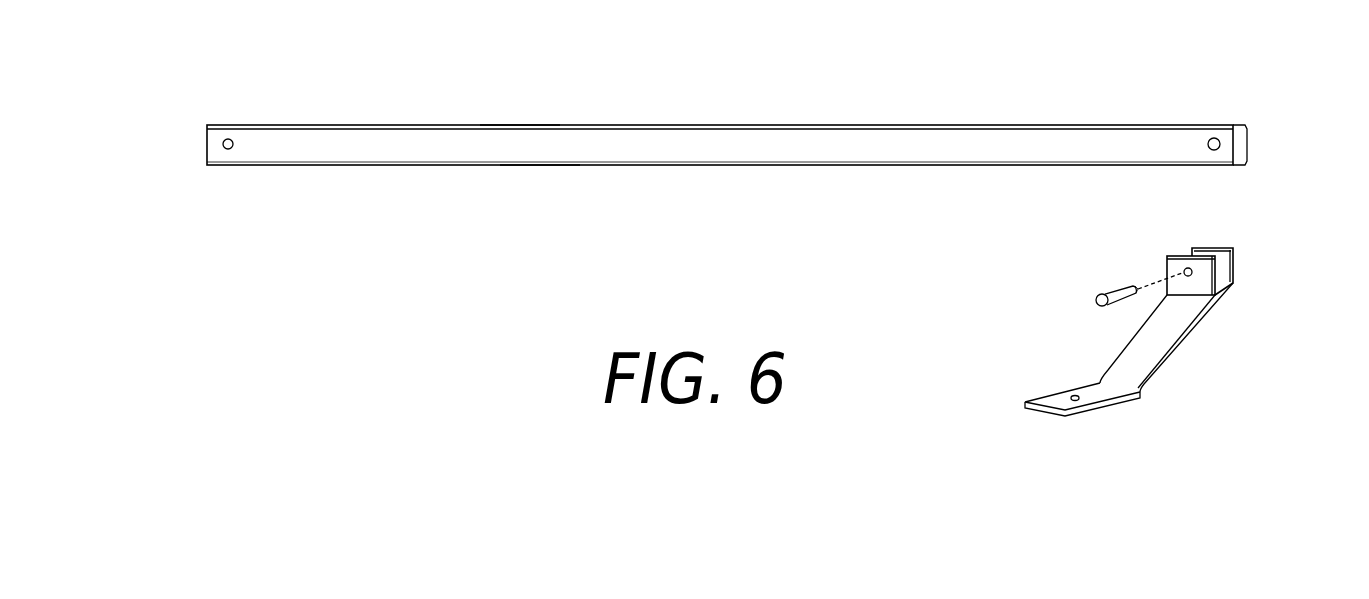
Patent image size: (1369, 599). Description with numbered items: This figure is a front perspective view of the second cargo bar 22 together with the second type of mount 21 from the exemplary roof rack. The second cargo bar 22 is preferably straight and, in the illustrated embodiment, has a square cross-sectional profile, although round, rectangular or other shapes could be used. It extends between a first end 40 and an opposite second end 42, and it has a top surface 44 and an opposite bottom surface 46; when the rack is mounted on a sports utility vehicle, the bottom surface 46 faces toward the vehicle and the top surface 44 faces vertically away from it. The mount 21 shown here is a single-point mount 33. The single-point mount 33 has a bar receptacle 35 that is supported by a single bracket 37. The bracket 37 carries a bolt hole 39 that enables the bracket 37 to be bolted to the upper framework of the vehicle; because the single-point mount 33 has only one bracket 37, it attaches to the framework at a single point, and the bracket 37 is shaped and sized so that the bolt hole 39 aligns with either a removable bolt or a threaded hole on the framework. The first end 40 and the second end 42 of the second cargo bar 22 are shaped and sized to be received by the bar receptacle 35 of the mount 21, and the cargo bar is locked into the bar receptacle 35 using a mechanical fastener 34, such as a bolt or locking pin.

The mount 21 is at (1105, 270).
The second cargo bar 22 is at (943, 125).
The single-point mount 33 is at (1190, 338).
The mechanical fastener 34 is at (1096, 300).
The bar receptacle 35 is at (1222, 262).
The bracket 37 is at (1137, 350).
The bolt hole 39 is at (1083, 395).
The first end 40 is at (207, 149).
The second end 42 is at (1247, 144).
The top surface 44 is at (518, 125).
The bottom surface 46 is at (533, 165).